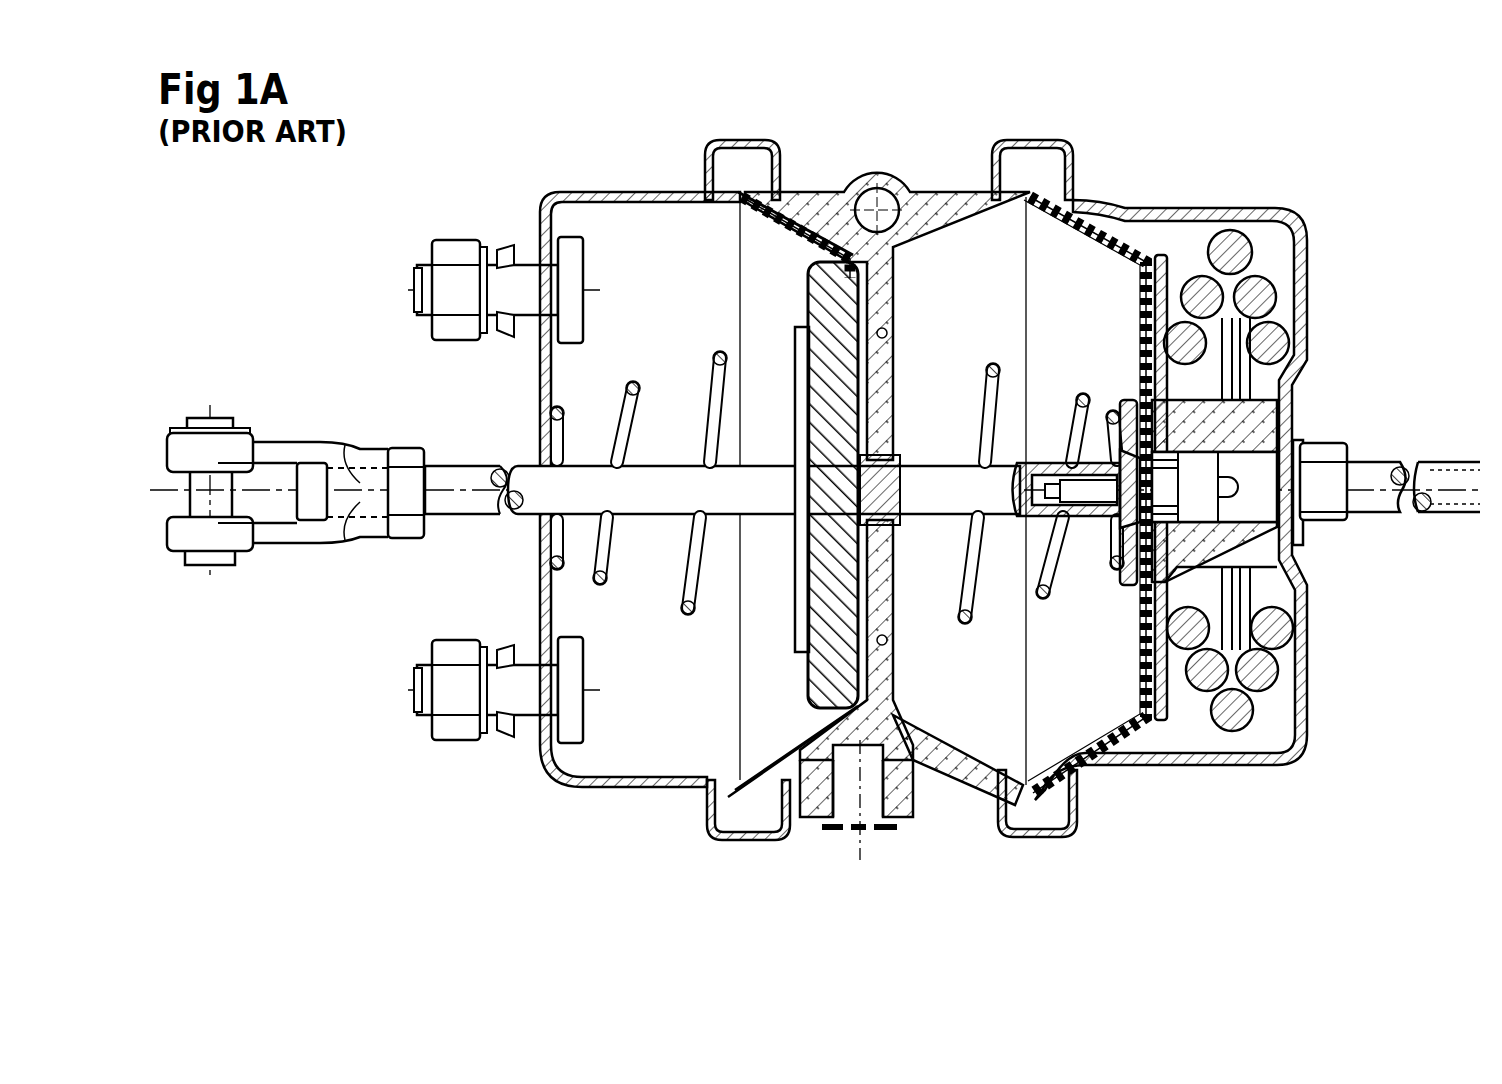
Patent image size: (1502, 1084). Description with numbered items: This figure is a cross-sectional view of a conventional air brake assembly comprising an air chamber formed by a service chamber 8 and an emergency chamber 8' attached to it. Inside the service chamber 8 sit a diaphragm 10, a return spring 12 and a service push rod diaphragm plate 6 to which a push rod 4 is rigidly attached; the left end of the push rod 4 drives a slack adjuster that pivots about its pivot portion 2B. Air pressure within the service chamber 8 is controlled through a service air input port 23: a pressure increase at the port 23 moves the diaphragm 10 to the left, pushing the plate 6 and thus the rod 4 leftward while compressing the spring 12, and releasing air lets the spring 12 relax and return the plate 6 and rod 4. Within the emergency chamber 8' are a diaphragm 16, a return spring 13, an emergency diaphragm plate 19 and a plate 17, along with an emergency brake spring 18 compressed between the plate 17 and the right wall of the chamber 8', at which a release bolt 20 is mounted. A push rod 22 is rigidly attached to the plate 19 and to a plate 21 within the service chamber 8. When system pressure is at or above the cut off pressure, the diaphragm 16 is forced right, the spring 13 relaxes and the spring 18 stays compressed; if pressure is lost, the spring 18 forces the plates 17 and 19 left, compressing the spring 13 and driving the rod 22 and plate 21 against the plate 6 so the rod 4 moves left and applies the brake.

The pivot portion 2B is at (200, 578).
The push rod 4 is at (452, 455).
The service push rod diaphragm plate 6 is at (795, 270).
The service chamber 8 is at (665, 515).
The emergency chamber 8' is at (1171, 529).
The diaphragm 10 is at (808, 720).
The return spring 12 is at (800, 327).
The return spring 13 is at (1105, 405).
The diaphragm 16 is at (1138, 243).
The plate 17 is at (1165, 243).
The emergency brake spring 18 is at (1262, 258).
The emergency diaphragm plate 19 is at (1125, 605).
The release bolt 20 is at (1383, 450).
The plate 21 is at (890, 575).
The push rod 22 is at (940, 452).
The service air input port 23 is at (860, 850).